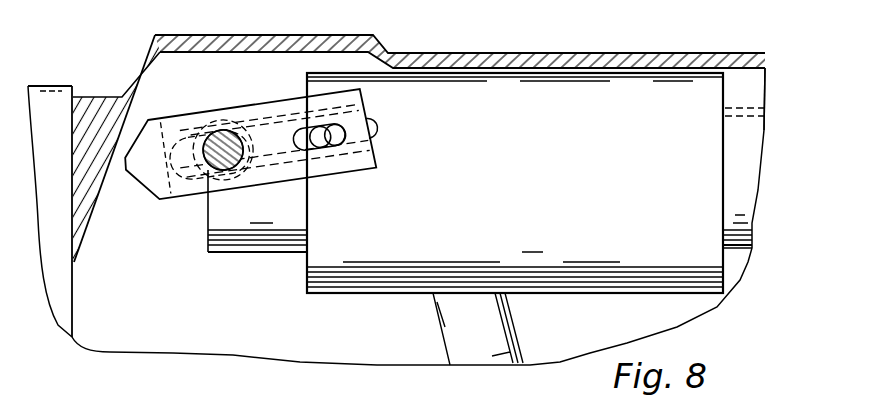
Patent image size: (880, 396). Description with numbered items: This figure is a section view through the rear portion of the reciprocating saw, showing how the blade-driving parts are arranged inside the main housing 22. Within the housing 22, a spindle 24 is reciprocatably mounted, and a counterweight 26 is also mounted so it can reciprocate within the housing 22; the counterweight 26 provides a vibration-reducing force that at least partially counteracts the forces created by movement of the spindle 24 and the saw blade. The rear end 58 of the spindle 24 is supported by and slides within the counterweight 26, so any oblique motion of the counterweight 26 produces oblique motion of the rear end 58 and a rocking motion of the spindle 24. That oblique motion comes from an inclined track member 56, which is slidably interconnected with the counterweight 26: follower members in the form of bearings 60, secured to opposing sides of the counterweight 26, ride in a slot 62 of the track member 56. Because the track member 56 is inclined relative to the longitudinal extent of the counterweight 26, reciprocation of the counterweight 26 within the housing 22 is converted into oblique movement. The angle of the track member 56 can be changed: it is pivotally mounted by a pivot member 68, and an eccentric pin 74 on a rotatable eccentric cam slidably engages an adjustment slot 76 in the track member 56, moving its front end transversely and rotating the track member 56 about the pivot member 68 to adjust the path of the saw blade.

The main housing 22 is at (374, 37).
The spindle 24 is at (746, 152).
The counterweight 26 is at (567, 82).
The inclined track member 56 is at (173, 117).
The rear end of the spindle 58 is at (207, 232).
The bearings 60 is at (379, 128).
The slot 62 is at (317, 148).
The pivot member 68 is at (223, 147).
The eccentric pin 74 is at (321, 141).
The adjustment slot 76 is at (343, 125).